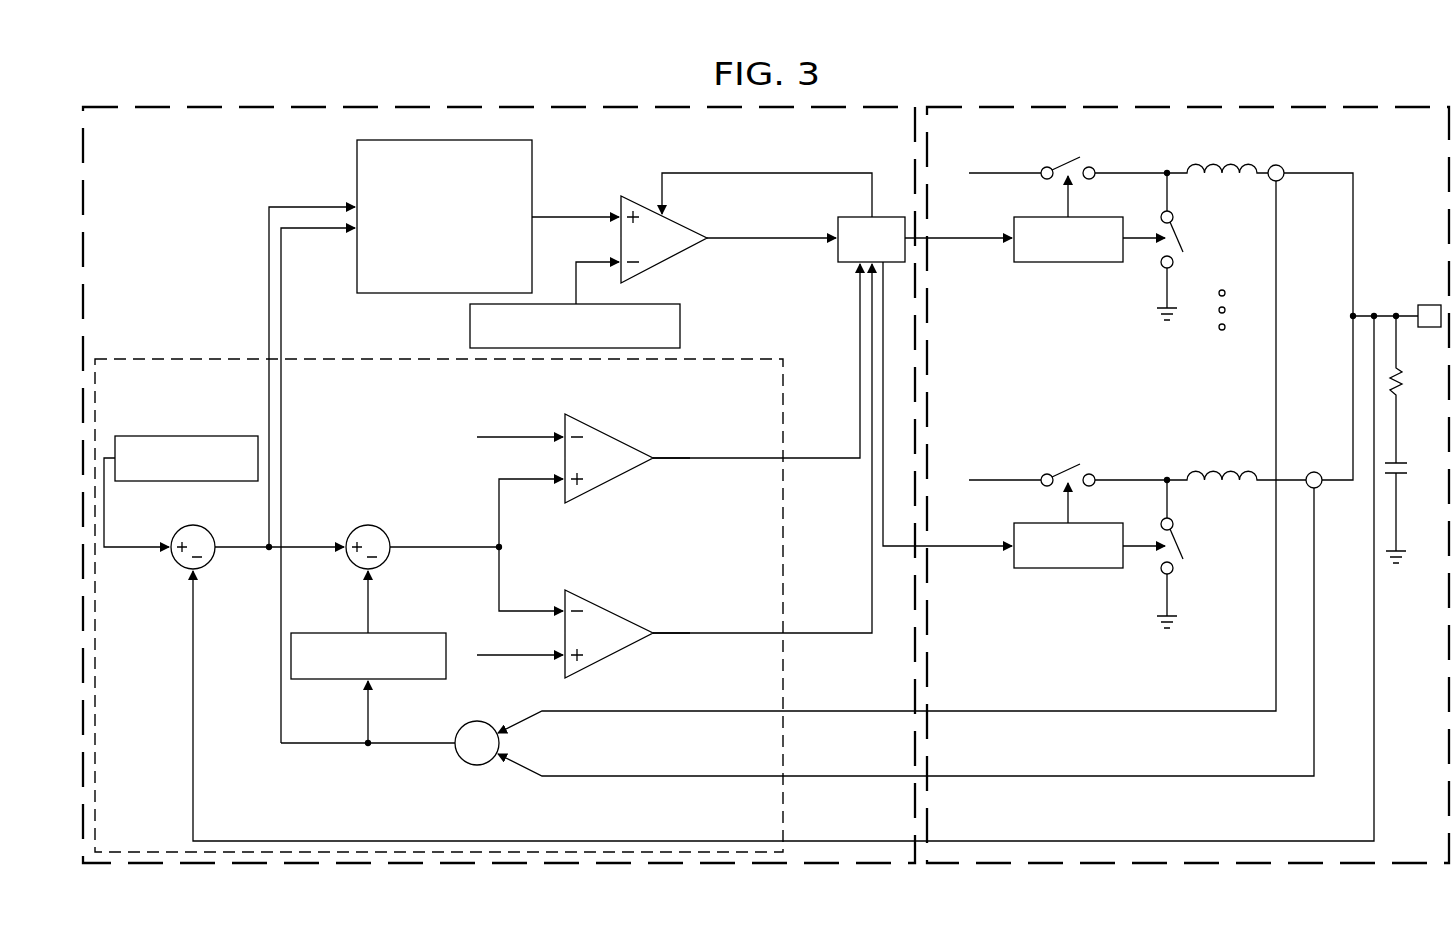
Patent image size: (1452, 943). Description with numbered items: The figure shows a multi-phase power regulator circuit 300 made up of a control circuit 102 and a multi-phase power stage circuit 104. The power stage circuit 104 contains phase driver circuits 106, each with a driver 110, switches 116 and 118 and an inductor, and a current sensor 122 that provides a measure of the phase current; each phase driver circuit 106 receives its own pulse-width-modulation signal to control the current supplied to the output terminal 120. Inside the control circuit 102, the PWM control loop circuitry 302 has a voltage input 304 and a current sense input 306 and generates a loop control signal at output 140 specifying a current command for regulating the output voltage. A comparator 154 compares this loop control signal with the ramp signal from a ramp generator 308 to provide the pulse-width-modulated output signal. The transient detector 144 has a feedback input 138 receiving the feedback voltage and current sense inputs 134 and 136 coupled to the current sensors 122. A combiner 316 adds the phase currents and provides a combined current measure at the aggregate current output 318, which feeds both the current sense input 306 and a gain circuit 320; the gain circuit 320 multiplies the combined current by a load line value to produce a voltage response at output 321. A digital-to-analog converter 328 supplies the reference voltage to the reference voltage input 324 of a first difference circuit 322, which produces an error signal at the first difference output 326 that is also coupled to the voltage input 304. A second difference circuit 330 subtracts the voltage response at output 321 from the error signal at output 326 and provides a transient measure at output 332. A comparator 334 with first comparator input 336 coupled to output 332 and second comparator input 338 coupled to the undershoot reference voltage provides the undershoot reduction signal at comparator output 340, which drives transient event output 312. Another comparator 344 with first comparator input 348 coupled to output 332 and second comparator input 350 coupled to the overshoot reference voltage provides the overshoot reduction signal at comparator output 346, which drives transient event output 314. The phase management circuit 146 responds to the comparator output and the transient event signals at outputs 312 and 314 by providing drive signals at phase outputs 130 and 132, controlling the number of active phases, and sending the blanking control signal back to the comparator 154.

The multi-phase power regulator circuit 300 is at (566, 70).
The control circuit 102 is at (366, 103).
The multi-phase power stage circuit 104 is at (1294, 103).
The phase driver circuit 106 is at (1018, 307).
The driver 110 is at (1077, 262).
The switch 116 is at (1063, 163).
The switch 118 is at (1175, 222).
The output terminal 120 is at (1370, 320).
The current sensor 122 is at (1287, 165).
The phase output 130 is at (1008, 248).
The phase output 132 is at (1008, 556).
The current sense input 134 is at (850, 710).
The current sense input 136 is at (850, 775).
The feedback input 138 is at (850, 840).
The output 140 is at (538, 208).
The transient detector 144 is at (324, 356).
The phase management circuit 146 is at (850, 263).
The comparator 154 is at (684, 265).
The PWM control loop circuitry 302 is at (466, 276).
The voltage input 304 is at (353, 200).
The current sense input 306 is at (353, 238).
The ramp generator 308 is at (470, 325).
The transient event output 312 is at (778, 465).
The transient event output 314 is at (778, 640).
The combiner 316 is at (480, 768).
The aggregate current output 318 is at (452, 752).
The gain circuit 320 is at (400, 680).
The output 321 is at (360, 577).
The first difference circuit 322 is at (183, 572).
The reference voltage input 324 is at (163, 557).
The first difference output 326 is at (223, 555).
The digital-to-analog converter 328 is at (187, 435).
The second difference circuit 330 is at (367, 523).
The output 332 is at (397, 557).
The comparator 334 is at (612, 429).
The first comparator input 336 is at (558, 488).
The second comparator input 338 is at (558, 447).
The comparator output 340 is at (655, 465).
The comparator 344 is at (612, 607).
The comparator output 346 is at (655, 640).
The first comparator input 348 is at (558, 603).
The second comparator input 350 is at (558, 663).